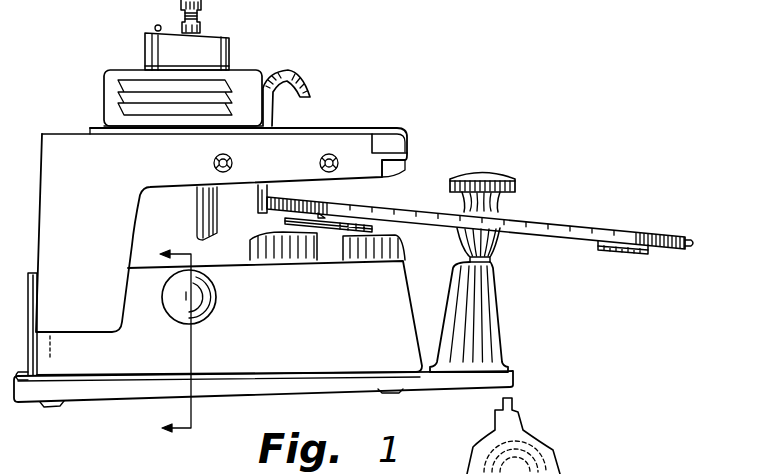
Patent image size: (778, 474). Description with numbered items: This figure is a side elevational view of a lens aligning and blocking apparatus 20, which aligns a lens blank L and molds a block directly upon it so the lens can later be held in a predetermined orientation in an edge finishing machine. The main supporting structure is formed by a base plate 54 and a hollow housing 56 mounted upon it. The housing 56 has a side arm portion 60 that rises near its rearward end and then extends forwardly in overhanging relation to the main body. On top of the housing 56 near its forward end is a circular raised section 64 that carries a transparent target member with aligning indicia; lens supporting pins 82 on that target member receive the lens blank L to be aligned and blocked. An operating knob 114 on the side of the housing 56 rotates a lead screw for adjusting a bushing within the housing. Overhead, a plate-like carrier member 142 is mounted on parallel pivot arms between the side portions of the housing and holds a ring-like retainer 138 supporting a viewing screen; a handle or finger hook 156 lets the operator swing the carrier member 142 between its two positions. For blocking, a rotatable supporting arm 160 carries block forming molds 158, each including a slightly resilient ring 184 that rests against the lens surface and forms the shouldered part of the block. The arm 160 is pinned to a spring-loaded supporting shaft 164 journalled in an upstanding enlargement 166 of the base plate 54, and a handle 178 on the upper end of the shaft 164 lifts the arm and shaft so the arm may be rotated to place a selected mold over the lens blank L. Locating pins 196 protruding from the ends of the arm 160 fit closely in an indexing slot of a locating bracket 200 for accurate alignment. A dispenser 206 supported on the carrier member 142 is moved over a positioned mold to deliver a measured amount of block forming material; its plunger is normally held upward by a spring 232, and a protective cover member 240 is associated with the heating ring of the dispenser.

The lens aligning and blocking apparatus 20 is at (385, 84).
The base plate 54 is at (267, 383).
The housing 56 is at (140, 370).
The side arm portion 60 is at (100, 144).
The raised section 64 is at (270, 262).
The lens supporting pins 82 is at (312, 238).
The operating knob 114 is at (210, 303).
The ring-like retainer 138 is at (387, 133).
The carrier member 142 is at (402, 148).
The handle or finger hook 156 is at (287, 72).
The block forming molds 158 is at (528, 460).
The supporting arm 160 is at (527, 225).
The supporting shaft 164 is at (475, 263).
The upstanding enlargement 166 is at (493, 313).
The handle 178 is at (485, 168).
The resilient ring 184 is at (635, 250).
The locating pins 196 is at (690, 236).
The locating bracket 200 is at (258, 212).
The dispenser 206 is at (145, 48).
The spring 232 is at (195, 28).
The protective cover member 240 is at (125, 68).
The lens blank L is at (377, 232).